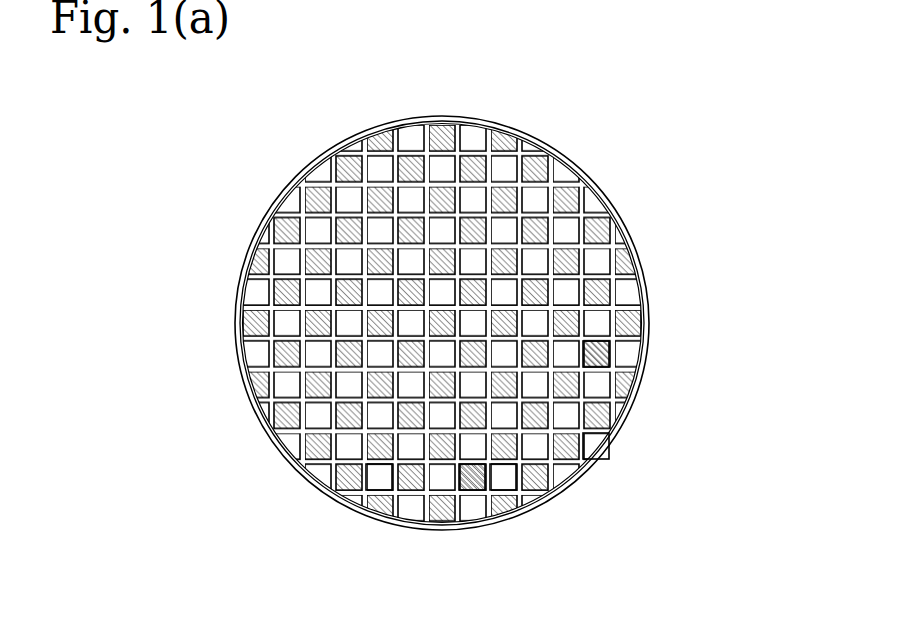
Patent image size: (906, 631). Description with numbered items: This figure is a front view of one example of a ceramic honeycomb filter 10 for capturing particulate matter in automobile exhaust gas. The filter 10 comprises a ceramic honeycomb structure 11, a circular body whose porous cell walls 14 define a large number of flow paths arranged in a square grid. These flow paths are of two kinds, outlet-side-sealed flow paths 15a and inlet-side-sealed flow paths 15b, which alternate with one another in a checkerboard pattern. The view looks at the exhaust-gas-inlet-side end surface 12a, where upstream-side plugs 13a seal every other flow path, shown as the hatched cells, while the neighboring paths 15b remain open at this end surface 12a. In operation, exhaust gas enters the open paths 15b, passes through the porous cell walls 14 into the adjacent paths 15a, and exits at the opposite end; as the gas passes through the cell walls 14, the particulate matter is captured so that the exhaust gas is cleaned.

The ceramic honeycomb filter 10 is at (430, 304).
The ceramic honeycomb structure 11 is at (265, 432).
The exhaust-gas-inlet-side end surface 12a is at (585, 443).
The upstream-side plug 13a is at (583, 348).
The porous cell wall 14 is at (382, 470).
The outlet-side-sealed flow path 15a is at (471, 479).
The inlet-side-sealed flow path 15b is at (505, 478).